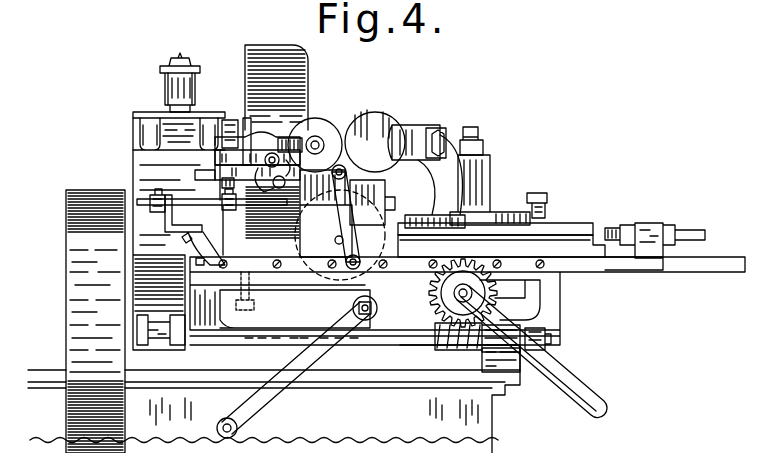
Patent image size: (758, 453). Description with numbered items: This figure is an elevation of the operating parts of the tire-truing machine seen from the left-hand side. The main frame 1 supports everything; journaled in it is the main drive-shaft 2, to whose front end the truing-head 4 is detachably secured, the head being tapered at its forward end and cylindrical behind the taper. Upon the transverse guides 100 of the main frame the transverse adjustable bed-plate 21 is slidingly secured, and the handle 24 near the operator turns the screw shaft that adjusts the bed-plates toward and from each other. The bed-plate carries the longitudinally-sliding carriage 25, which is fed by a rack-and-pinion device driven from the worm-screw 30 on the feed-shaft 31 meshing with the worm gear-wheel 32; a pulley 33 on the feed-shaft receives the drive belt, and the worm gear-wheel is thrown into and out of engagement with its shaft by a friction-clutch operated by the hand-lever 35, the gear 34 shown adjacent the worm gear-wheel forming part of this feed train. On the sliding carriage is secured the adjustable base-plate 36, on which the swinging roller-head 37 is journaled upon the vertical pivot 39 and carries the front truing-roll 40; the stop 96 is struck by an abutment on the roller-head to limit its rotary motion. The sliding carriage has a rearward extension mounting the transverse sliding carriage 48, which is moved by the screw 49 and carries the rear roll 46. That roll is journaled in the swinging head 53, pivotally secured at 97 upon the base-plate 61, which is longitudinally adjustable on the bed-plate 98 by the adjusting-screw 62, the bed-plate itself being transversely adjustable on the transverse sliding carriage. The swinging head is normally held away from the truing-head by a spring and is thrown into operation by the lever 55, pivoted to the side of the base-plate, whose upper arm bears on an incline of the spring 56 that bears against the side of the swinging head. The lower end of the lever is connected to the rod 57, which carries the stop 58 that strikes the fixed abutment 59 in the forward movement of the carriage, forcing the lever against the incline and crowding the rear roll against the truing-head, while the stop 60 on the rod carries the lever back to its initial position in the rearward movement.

The main frame 1 is at (137, 192).
The main drive-shaft 2 is at (128, 142).
The truing-head 4 is at (305, 82).
The transverse adjustable bed-plate 21 is at (467, 301).
The handle 24 is at (270, 405).
The longitudinally-sliding carriage 25 is at (655, 247).
The worm-screw 30 is at (497, 372).
The feed-shaft 31 is at (546, 345).
The worm gear-wheel 32 is at (483, 232).
The pulley 33 is at (90, 277).
The gear 34 is at (457, 268).
The hand-lever 35 is at (570, 375).
The adjustable base-plate 36 is at (590, 228).
The swinging roller-head 37 is at (492, 212).
The vertical pivot 39 is at (480, 140).
The front truing-roll 40 is at (383, 126).
The rear roll 46 is at (320, 122).
The transverse sliding carriage 48 is at (340, 225).
The screw 49 is at (338, 236).
The swinging head 53 is at (286, 138).
The lever 55 is at (272, 143).
The spring 56 is at (247, 130).
The rod 57 is at (188, 206).
The stop 58 is at (231, 212).
The fixed abutment 59 is at (180, 233).
The stop 60 is at (157, 212).
The base-plate 61 is at (228, 152).
The adjusting-screw 62 is at (198, 176).
The stop 96 is at (548, 217).
The pivot 97 is at (228, 122).
The bed-plate 98 is at (224, 184).
The transverse guides 100 is at (520, 293).